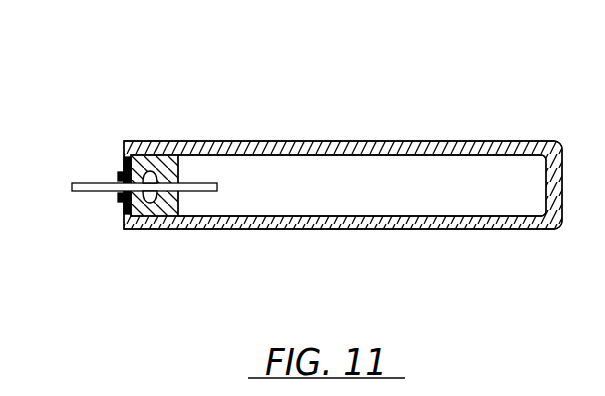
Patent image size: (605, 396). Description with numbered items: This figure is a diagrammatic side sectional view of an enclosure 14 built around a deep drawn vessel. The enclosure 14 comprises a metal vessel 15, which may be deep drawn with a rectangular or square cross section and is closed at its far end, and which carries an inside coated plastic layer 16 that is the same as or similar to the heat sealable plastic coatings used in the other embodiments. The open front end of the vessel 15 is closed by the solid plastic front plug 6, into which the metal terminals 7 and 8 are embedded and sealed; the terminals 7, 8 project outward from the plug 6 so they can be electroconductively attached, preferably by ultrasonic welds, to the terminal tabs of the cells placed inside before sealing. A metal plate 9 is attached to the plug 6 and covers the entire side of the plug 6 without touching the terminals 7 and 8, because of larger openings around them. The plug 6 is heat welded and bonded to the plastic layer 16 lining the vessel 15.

The front plug 6 is at (160, 170).
The terminal 7 is at (122, 195).
The terminal 8 is at (144, 187).
The metal plate 9 is at (123, 163).
The enclosure 14 is at (294, 183).
The metal vessel 15 is at (307, 141).
The inside coated plastic layer 16 is at (378, 158).